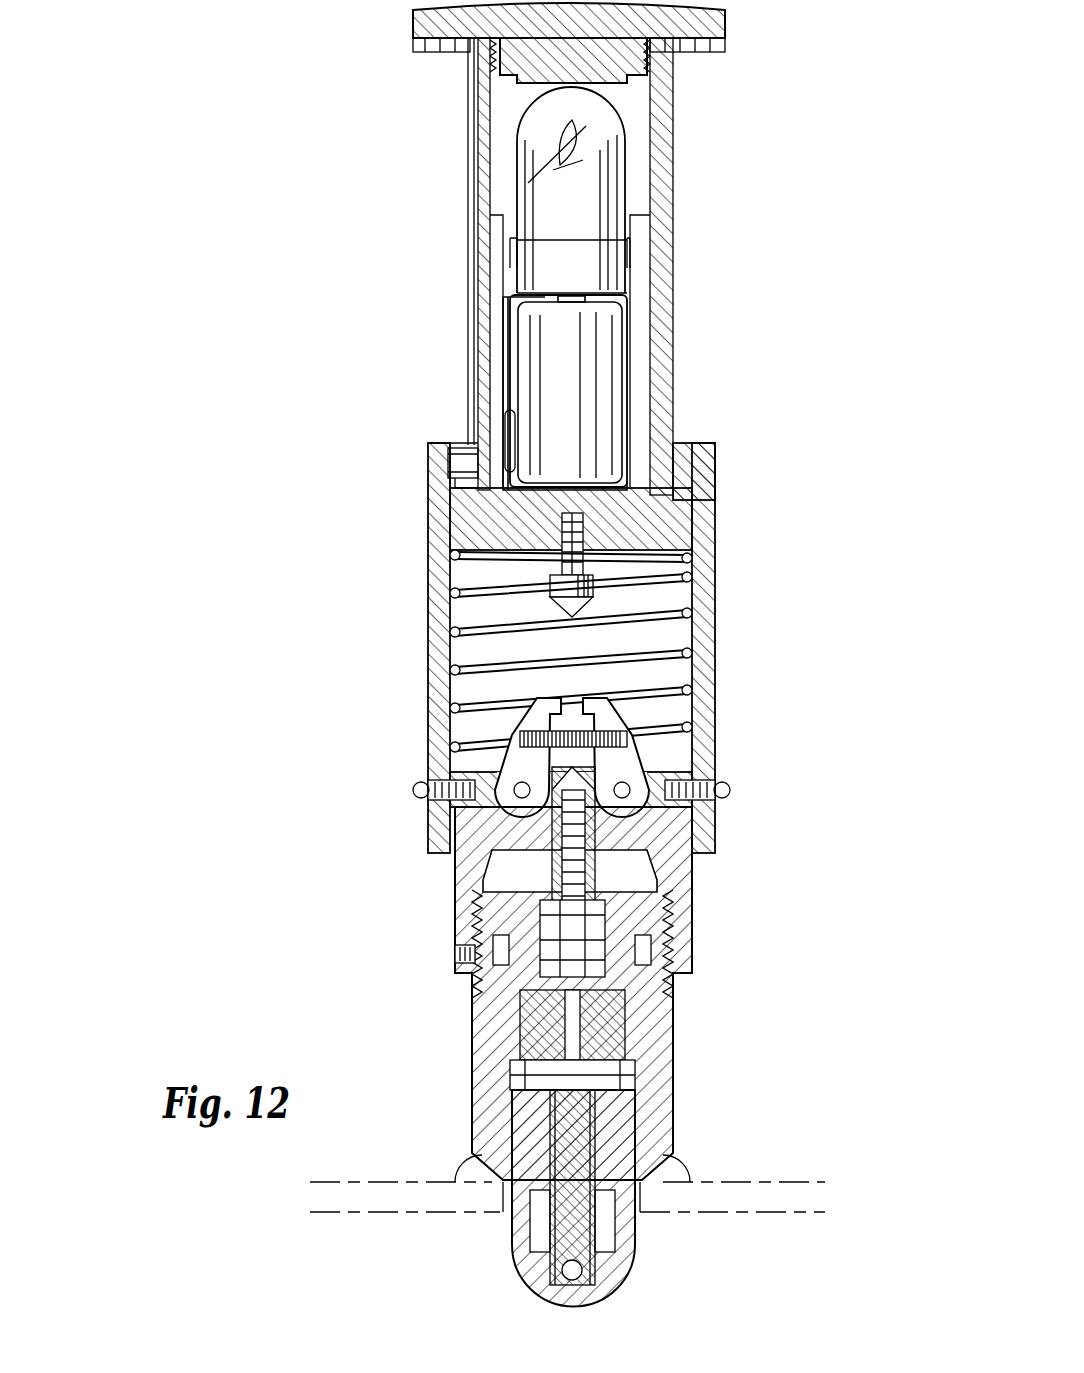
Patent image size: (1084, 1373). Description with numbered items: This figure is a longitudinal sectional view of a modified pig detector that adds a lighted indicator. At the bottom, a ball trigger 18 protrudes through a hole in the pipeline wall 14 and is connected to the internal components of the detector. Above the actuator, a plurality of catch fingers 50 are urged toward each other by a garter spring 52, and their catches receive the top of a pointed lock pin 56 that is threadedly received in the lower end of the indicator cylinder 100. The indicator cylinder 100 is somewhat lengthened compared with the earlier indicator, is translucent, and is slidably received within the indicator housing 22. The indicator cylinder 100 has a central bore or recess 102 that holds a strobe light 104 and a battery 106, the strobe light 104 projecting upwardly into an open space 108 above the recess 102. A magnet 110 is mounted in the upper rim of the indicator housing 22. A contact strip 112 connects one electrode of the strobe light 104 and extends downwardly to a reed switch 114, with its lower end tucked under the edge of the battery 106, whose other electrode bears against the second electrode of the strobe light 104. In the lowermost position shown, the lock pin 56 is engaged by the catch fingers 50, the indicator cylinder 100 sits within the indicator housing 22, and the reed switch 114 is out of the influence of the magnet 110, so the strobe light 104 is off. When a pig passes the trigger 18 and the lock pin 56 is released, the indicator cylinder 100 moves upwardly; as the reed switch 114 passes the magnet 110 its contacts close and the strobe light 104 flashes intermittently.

The panel wall 14 is at (768, 1190).
The ball trigger 18 is at (512, 1253).
The indicator housing 22 is at (707, 613).
The catch fingers 50 is at (527, 765).
The garter spring 52 is at (565, 725).
The lock pin 56 is at (593, 600).
The indicator cylinder 100 is at (653, 260).
The central bore or recess 102 is at (627, 340).
The strobe light 104 is at (602, 198).
The battery 106 is at (600, 378).
The open space 108 is at (642, 125).
The magnet 110 is at (462, 460).
The contact strip 112 is at (507, 293).
The reed switch 114 is at (507, 420).